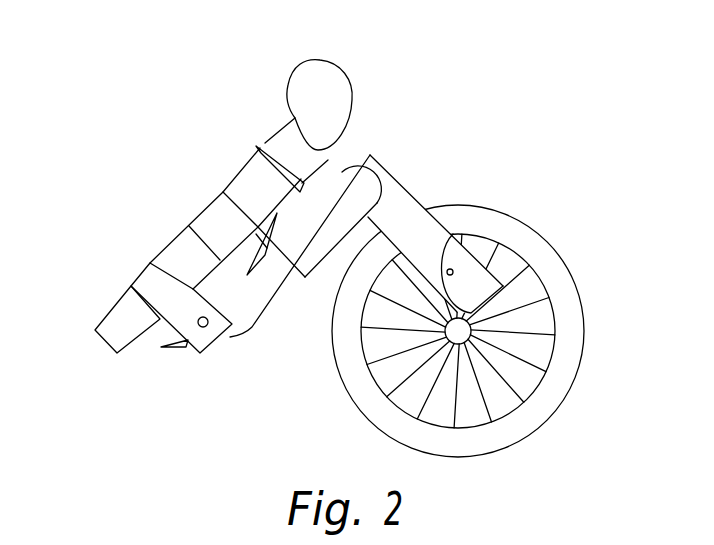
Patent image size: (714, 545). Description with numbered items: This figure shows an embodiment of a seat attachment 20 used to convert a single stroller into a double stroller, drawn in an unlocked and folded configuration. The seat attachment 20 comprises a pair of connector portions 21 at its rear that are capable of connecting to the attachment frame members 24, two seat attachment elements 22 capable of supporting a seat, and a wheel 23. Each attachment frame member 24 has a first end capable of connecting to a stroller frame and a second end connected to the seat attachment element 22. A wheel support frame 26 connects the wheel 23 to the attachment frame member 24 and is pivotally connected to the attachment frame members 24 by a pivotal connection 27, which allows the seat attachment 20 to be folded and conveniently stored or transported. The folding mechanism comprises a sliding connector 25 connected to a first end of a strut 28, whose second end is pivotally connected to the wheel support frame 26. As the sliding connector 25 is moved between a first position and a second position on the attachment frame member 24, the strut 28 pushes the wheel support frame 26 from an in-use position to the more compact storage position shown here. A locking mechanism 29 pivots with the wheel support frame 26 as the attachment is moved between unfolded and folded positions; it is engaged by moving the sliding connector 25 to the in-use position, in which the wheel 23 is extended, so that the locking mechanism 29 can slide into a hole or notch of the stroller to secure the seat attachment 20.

The seat attachment 20 is at (209, 83).
The connector portion 21 is at (114, 316).
The seat attachment element 22 is at (340, 90).
The wheel 23 is at (568, 374).
The attachment frame member 24 is at (206, 211).
The sliding connector 25 is at (263, 175).
The wheel support frame 26 is at (345, 218).
The pivotal connection 27 is at (208, 323).
The strut 28 is at (247, 271).
The locking mechanism 29 is at (174, 350).